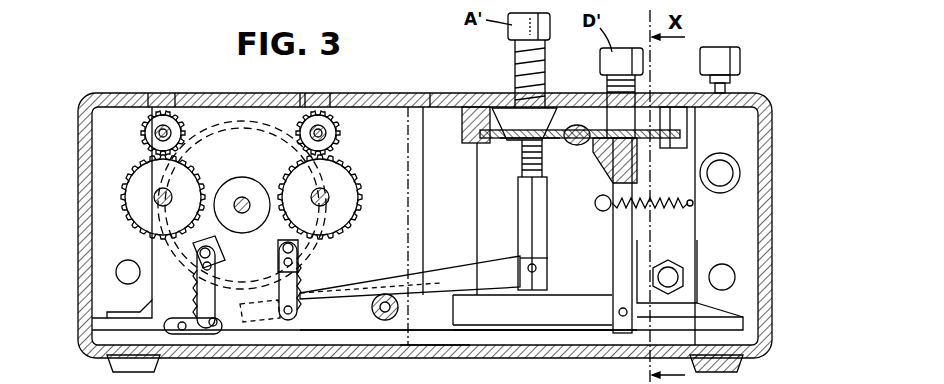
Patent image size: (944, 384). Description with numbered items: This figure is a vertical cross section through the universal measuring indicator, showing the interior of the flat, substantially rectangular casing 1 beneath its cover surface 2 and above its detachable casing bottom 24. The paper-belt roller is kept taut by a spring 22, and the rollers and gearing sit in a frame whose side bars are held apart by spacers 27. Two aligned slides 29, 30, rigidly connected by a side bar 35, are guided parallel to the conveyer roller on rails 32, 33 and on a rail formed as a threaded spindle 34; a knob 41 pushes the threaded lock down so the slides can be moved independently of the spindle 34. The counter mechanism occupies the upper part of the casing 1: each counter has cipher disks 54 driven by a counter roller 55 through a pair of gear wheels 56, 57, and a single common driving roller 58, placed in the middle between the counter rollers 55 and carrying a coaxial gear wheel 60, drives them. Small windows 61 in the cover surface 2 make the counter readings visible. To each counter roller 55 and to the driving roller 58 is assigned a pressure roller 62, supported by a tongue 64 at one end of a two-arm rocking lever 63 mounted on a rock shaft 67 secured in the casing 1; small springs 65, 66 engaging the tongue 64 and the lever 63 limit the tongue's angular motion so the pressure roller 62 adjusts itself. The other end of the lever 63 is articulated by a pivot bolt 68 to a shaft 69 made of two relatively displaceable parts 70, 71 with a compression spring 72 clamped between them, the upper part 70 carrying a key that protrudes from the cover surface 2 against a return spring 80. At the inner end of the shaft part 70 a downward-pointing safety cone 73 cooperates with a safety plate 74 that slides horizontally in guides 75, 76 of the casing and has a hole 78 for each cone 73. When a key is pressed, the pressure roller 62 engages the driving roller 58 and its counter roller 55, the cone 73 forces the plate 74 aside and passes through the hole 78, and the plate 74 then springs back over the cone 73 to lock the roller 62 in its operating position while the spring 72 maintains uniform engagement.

The casing 1 is at (772, 148).
The cover surface 2 is at (413, 100).
The spring 22 is at (650, 208).
The casing bottom 24 is at (458, 352).
The spacer 27 is at (668, 270).
The slide 29 is at (760, 318).
The slide 30 is at (100, 318).
The rail 32 is at (117, 273).
The rail 33 is at (725, 275).
The threaded spindle 34 is at (722, 174).
The side bar 35 is at (735, 365).
The knob 41 is at (740, 60).
The cipher disks 54 is at (172, 120).
The counter roller 55 is at (118, 200).
The gear wheel 56 is at (130, 205).
The gear wheel 57 is at (142, 122).
The driving roller 58 is at (242, 182).
The gear wheel 60 is at (236, 121).
The window 61 is at (160, 110).
The pressure roller 62 is at (198, 248).
The rocking lever 63 is at (452, 275).
The tongue 64 is at (198, 275).
The spring 65 is at (197, 292).
The spring 66 is at (235, 325).
The rock shaft 67 is at (383, 320).
The pivot bolt 68 is at (623, 318).
The shaft 69 is at (608, 238).
The shaft part 70 is at (518, 80).
The shaft part 71 is at (520, 214).
The compression spring 72 is at (522, 160).
The safety cone 73 is at (577, 145).
The safety plate 74 is at (650, 148).
The guide 75 is at (462, 143).
The guide 76 is at (687, 125).
The hole 78 is at (552, 105).
The return spring 80 is at (515, 35).